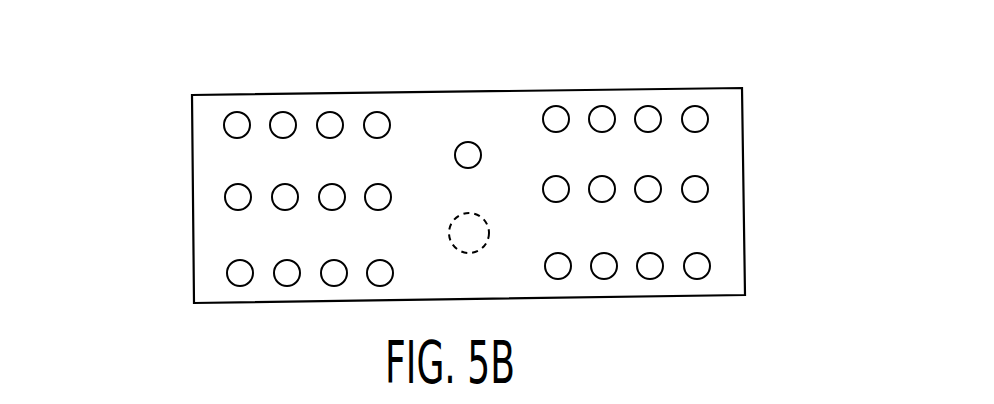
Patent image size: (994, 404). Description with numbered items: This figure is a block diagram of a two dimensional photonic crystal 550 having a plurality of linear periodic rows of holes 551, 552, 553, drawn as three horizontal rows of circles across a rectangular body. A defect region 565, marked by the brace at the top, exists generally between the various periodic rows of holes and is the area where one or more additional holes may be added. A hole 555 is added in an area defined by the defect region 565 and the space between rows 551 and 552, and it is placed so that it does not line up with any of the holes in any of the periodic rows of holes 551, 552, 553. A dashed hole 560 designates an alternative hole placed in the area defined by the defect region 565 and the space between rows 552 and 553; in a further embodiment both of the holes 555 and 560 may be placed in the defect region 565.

The substrate / sheet 550 is at (207, 188).
The periodic row of holes 551 is at (718, 117).
The periodic row of holes 552 is at (718, 187).
The periodic row of holes 553 is at (720, 265).
The hole 555 is at (457, 145).
The dashed hole 560 is at (475, 242).
The defect region 565 is at (539, 78).